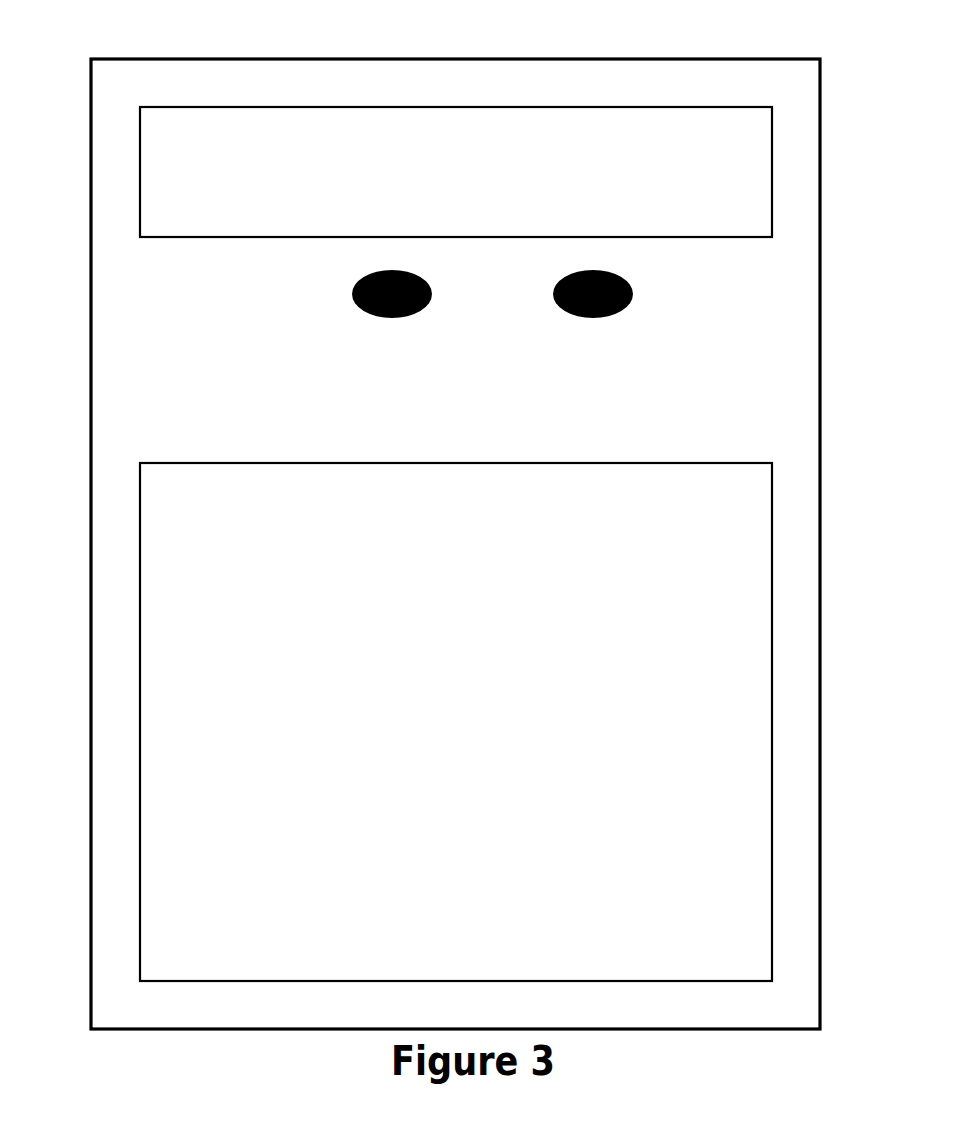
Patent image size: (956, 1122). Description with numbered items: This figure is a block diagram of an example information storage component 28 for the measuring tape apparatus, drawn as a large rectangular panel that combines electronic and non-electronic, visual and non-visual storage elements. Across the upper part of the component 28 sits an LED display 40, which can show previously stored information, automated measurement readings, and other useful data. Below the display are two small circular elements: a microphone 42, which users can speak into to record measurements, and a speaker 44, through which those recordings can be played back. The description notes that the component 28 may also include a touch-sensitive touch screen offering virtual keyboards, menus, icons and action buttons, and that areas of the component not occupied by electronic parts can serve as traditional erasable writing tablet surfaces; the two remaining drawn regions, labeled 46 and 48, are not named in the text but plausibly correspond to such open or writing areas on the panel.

The information storage component 28 is at (106, 46).
The LED display 40 is at (218, 188).
The microphone 42 is at (352, 302).
The speaker 44 is at (578, 318).
The background area between regions 46 is at (612, 423).
The lower display region 48 is at (612, 638).